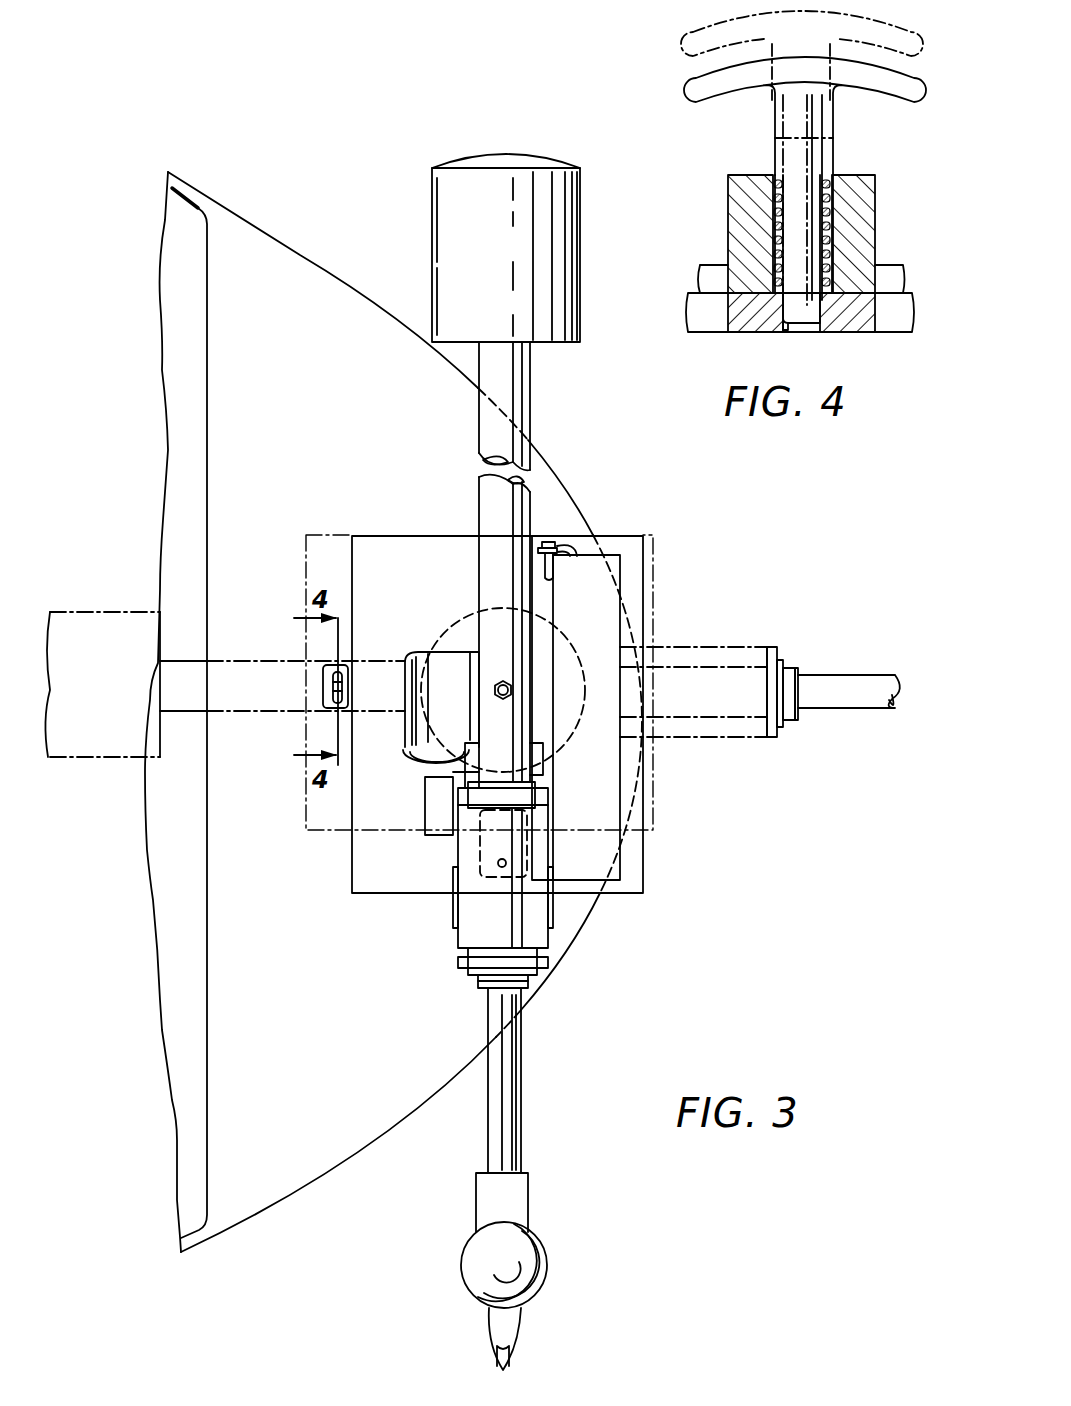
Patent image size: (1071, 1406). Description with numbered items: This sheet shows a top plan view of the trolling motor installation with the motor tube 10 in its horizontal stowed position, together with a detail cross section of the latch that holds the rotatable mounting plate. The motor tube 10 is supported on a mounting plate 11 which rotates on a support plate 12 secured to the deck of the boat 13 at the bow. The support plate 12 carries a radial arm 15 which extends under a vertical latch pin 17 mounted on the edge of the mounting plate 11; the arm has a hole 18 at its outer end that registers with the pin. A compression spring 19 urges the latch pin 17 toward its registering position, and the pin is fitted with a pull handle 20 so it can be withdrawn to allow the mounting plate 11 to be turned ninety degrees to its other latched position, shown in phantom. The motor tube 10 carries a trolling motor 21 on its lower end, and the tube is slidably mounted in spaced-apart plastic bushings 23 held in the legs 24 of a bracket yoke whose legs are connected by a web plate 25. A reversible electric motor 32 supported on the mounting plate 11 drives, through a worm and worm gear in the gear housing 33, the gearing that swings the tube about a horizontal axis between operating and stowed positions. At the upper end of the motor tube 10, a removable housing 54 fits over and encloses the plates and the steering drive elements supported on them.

In FIG. 3, the motor tube 10 is at (541, 491).
In FIG. 3, the mounting plate 11 is at (415, 540).
In FIG. 4, the mounting plate 11 is at (703, 268).
In FIG. 4, the support plate 12 is at (707, 322).
In FIG. 3, the boat 13 is at (378, 1133).
In FIG. 3, the radial arm 15 is at (323, 684).
In FIG. 4, the radial arm 15 is at (858, 320).
In FIG. 4, the latch pin 17 is at (806, 316).
In FIG. 4, the hole 18 is at (785, 326).
In FIG. 4, the compression spring 19 is at (832, 188).
In FIG. 3, the pull handle 20 is at (343, 681).
In FIG. 4, the pull handle 20 is at (685, 50).
In FIG. 3, the trolling motor 21 is at (528, 1247).
In FIG. 3, the plastic bushings 23 is at (535, 974).
In FIG. 3, the legs 24 is at (540, 795).
In FIG. 3, the web plate 25 is at (465, 933).
In FIG. 3, the reversible electric motor 32 is at (405, 756).
In FIG. 3, the gear housing 33 is at (425, 788).
In FIG. 3, the removable housing 54 is at (506, 248).